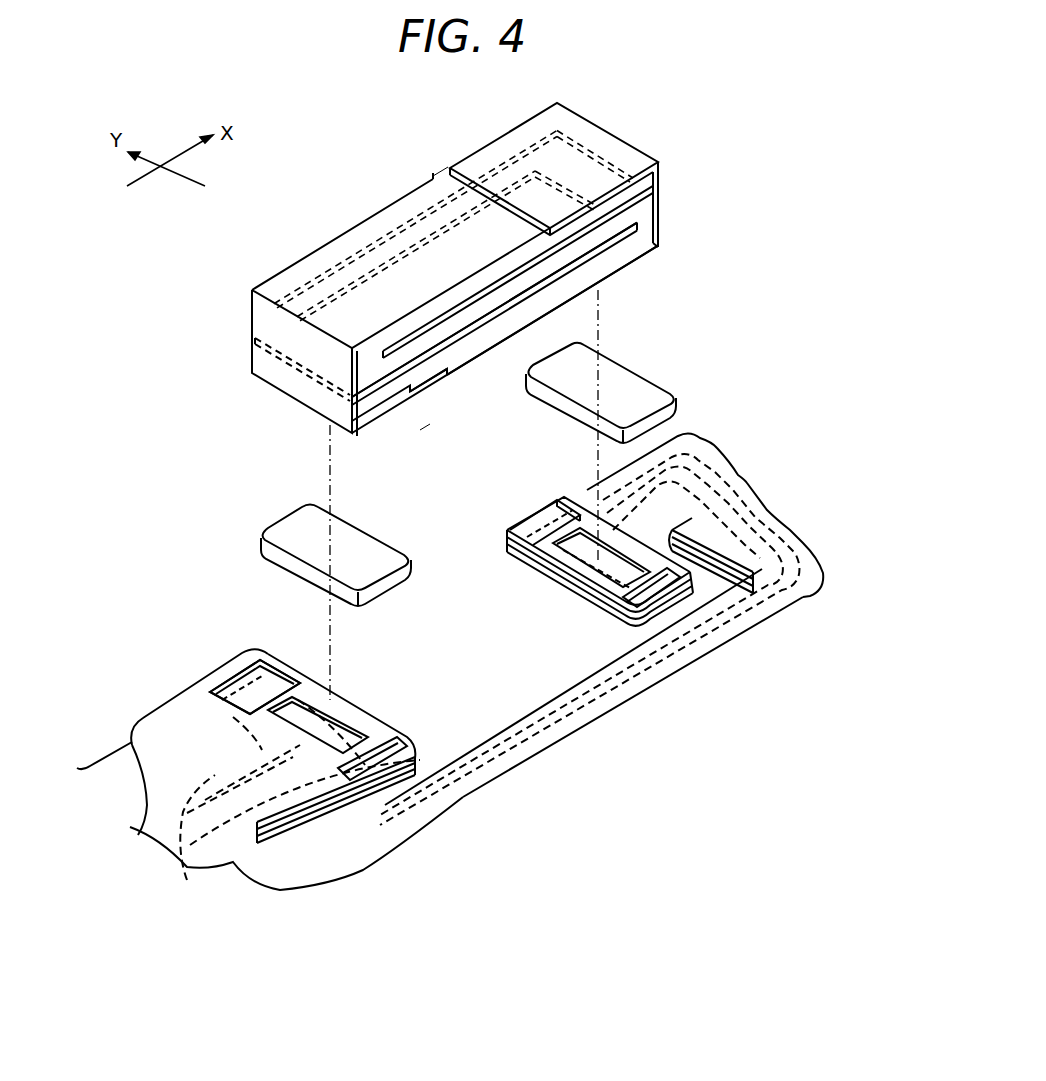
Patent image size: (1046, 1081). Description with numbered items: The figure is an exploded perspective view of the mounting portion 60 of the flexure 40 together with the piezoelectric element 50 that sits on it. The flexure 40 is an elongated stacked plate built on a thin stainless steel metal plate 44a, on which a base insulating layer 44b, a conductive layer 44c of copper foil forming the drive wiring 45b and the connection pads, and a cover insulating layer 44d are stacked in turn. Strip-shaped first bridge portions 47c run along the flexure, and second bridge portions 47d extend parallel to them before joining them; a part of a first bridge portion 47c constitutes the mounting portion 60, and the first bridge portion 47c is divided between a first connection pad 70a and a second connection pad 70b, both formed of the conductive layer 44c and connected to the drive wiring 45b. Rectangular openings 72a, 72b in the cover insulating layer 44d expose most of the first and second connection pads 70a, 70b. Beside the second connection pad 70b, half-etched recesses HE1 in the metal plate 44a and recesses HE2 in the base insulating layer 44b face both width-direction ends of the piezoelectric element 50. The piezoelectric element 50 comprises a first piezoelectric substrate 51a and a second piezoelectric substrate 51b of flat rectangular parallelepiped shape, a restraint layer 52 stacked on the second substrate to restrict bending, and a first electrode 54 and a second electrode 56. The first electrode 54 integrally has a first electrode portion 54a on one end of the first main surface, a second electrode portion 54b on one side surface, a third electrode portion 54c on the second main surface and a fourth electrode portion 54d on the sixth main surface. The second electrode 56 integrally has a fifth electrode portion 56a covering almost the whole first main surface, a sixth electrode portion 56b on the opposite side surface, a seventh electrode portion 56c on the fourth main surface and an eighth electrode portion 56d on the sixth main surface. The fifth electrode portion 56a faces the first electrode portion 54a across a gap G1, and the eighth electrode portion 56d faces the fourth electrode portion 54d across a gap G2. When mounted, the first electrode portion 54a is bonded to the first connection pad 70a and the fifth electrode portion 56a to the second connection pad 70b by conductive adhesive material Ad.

The flexure 40 is at (462, 668).
The metal plate 44a is at (660, 612).
The base insulating layer 44b is at (690, 596).
The conductive layer 44c is at (740, 628).
The cover insulating layer 44d is at (693, 574).
The drive wiring 45b is at (190, 852).
The first bridge portion 47c is at (108, 745).
The second bridge portion 47d is at (613, 703).
The piezoelectric element 50 is at (470, 290).
The first piezoelectric substrate 51a is at (430, 388).
The second piezoelectric substrate 51b is at (541, 283).
The restraint layer 52 is at (478, 288).
The first electrode 54 is at (431, 325).
The first electrode portion 54a is at (368, 432).
The second electrode portion 54b is at (268, 378).
The third electrode portion 54c is at (473, 388).
The fourth electrode portion 54d is at (300, 268).
The second electrode 56 is at (591, 270).
The fifth electrode portion 56a is at (500, 348).
The sixth electrode portion 56b is at (662, 208).
The seventh electrode portion 56c is at (600, 248).
The eighth electrode portion 56d is at (620, 148).
The mounting portion 60 is at (418, 682).
The first connection pad 70a is at (325, 732).
The second connection pad 70b is at (586, 565).
The opening 72a is at (300, 690).
The opening 72b is at (537, 575).
The conductive adhesive material Ad is at (640, 390).
The gap G1 is at (428, 410).
The gap G2 is at (440, 172).
The recess HE1 is at (411, 682).
The recess HE2 is at (236, 686).